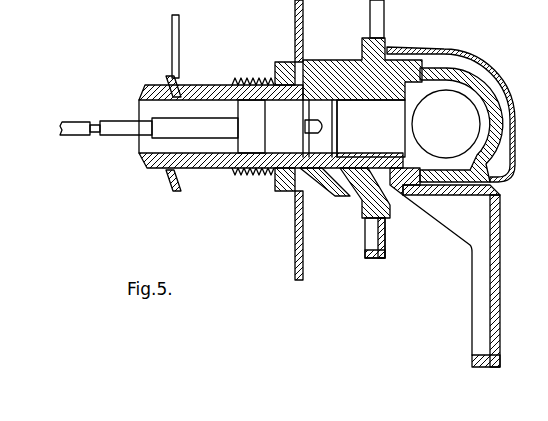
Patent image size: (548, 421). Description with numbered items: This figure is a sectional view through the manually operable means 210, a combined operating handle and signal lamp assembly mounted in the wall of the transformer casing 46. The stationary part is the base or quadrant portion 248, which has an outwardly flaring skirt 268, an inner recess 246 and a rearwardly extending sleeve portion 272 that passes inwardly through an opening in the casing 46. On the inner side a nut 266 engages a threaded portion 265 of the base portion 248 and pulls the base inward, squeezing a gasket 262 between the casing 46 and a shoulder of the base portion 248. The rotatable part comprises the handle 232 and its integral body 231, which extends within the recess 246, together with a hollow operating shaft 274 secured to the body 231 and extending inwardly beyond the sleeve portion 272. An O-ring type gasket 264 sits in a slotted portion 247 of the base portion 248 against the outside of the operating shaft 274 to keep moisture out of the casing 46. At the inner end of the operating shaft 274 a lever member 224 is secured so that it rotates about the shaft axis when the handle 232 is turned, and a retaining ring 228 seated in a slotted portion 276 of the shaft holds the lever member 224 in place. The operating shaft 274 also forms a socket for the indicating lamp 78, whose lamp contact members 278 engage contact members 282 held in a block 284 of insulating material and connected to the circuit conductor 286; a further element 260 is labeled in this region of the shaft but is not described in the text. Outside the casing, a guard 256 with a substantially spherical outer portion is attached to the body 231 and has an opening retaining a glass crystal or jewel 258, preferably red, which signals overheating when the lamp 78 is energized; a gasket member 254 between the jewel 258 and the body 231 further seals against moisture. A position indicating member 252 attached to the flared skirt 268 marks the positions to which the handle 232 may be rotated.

The casing 46 is at (298, 243).
The indicating lamp 78 is at (458, 148).
The manually operable means 210 is at (393, 303).
The lever member 224 is at (172, 24).
The retaining ring 228 is at (168, 84).
The body 231 is at (404, 192).
The handle 232 is at (500, 220).
The inner recess 246 is at (388, 58).
The slotted portion 247 is at (344, 166).
The base portion 248 is at (338, 186).
The position indicating member 252 is at (386, 249).
The gasket member 254 is at (432, 48).
The guard 256 is at (465, 54).
The glass crystal or jewel 258 is at (488, 92).
The block 260 is at (398, 150).
The gasket 262 is at (310, 60).
The O-ring type gasket 264 is at (332, 62).
The threaded portion 265 is at (254, 78).
The nut 266 is at (285, 62).
The outwardly flaring skirt 268 is at (365, 216).
The sleeve portion 272 is at (190, 84).
The operating shaft 274 is at (212, 88).
The slotted portion 276 is at (162, 146).
The lamp contact members 278 is at (325, 126).
The contact members 282 is at (308, 127).
The block of insulating material 284 is at (238, 172).
The circuit conductor 286 is at (135, 137).